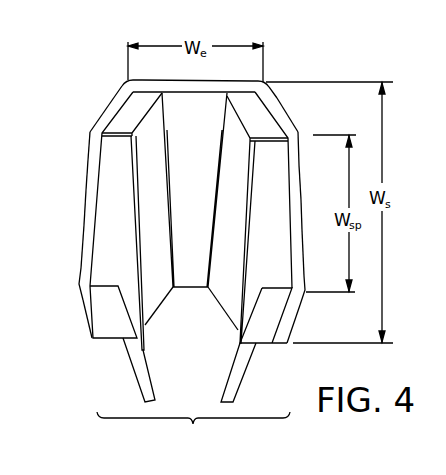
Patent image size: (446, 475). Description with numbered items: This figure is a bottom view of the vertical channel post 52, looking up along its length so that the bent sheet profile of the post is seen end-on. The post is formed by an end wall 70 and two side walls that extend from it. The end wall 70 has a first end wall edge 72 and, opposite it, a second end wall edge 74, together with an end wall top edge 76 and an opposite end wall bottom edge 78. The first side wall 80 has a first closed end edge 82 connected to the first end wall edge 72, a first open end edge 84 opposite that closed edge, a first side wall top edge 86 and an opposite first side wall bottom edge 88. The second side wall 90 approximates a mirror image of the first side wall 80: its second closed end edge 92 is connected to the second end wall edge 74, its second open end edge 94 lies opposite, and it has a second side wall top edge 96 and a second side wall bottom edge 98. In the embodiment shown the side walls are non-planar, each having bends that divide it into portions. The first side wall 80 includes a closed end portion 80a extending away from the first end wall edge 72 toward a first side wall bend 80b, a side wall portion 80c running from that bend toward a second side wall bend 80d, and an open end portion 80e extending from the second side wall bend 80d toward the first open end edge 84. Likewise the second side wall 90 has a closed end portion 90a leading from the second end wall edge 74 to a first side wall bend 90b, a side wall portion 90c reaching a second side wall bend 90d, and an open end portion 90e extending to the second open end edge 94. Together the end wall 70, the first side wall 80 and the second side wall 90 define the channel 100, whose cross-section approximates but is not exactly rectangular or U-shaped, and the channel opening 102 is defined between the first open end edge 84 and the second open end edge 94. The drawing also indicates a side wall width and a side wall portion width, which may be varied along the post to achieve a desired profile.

The vertical channel post 52 is at (378, 55).
The end wall 70 is at (216, 79).
The first end wall edge 72 is at (292, 80).
The second end wall edge 74 is at (97, 79).
The end wall top edge 76 is at (192, 287).
The end wall bottom edge 78 is at (186, 88).
The first side wall 80 is at (300, 172).
The closed end portion 80a is at (282, 110).
The first side wall bend 80b is at (298, 138).
The side wall portion 80c is at (301, 198).
The second side wall bend 80d is at (306, 292).
The open end portion 80e is at (295, 318).
The first closed end edge 82 is at (265, 81).
The first open end edge 84 is at (281, 343).
The first side wall top edge 86 is at (225, 313).
The first side wall bottom edge 88 is at (298, 240).
The second side wall 90 is at (85, 210).
The closed end portion 90a is at (108, 108).
The first side wall bend 90b is at (92, 131).
The side wall portion 90c is at (88, 172).
The second side wall bend 90d is at (78, 284).
The open end portion 90e is at (83, 314).
The second closed end edge 92 is at (128, 80).
The second open end edge 94 is at (100, 338).
The second side wall top edge 96 is at (157, 309).
The second side wall bottom edge 98 is at (86, 251).
The channel 100 is at (205, 358).
The channel opening 102 is at (193, 433).